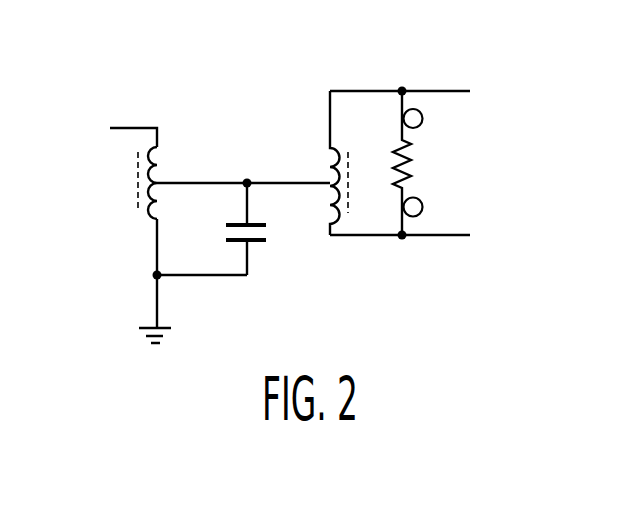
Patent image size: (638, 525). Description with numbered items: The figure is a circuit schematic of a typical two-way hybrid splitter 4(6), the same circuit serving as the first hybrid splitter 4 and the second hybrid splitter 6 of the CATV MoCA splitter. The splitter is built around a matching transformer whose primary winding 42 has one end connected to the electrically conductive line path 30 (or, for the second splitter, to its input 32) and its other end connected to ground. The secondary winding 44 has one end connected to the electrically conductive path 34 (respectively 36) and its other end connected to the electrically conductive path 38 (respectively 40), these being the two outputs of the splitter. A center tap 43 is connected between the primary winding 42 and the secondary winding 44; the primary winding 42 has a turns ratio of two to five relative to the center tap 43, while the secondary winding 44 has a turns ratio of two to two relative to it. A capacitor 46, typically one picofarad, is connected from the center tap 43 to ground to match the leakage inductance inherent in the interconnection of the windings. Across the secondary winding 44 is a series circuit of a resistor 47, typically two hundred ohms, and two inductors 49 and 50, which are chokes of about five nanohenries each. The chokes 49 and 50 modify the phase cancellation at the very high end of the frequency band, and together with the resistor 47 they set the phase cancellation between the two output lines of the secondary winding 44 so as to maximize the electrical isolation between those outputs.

The 2-way hybrid splitter 4 is at (292, 171).
The second 2-way hybrid splitter 6 is at (234, 75).
The electrically conductive line path 30 is at (119, 98).
The input 32 is at (130, 128).
The primary winding 42 is at (167, 157).
The center tap 43 is at (247, 183).
The secondary winding 44 is at (320, 157).
The capacitor 46 is at (266, 233).
The electrically conducted path 34 is at (400, 53).
The electrically conductive path 36 is at (437, 91).
The electrically conductive path 38 is at (411, 272).
The electrically conductive path 40 is at (433, 235).
The resistor 47 is at (412, 160).
The inductor 49 is at (423, 119).
The inductor 50 is at (423, 208).